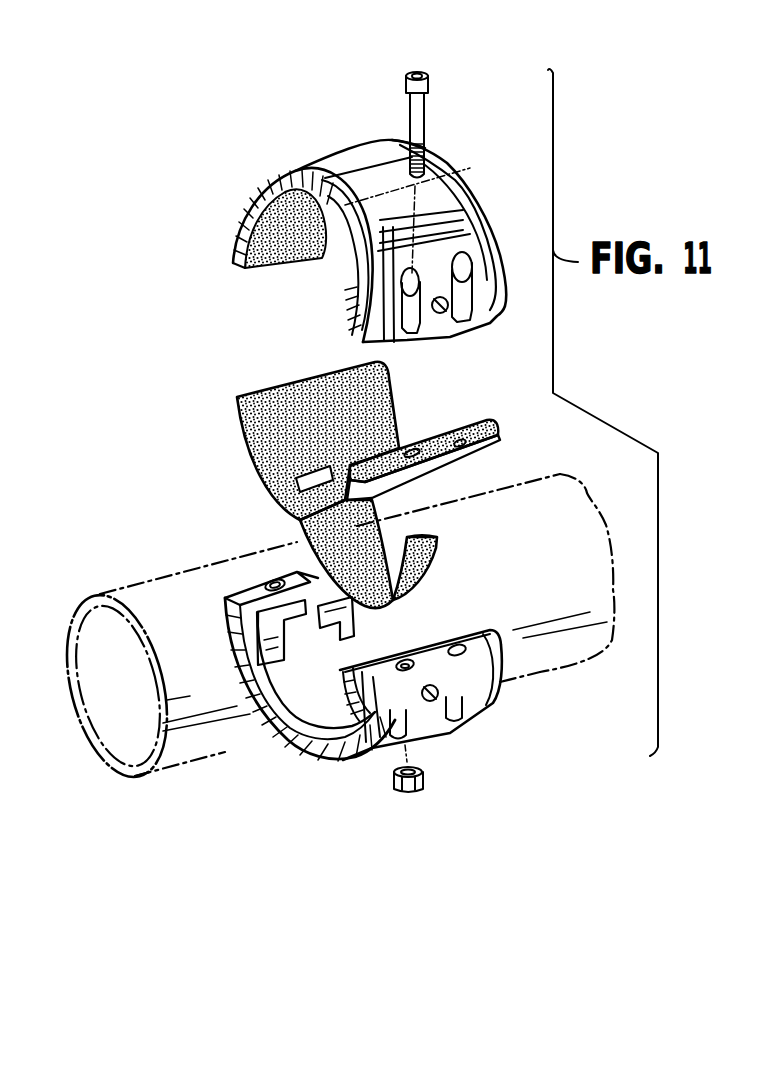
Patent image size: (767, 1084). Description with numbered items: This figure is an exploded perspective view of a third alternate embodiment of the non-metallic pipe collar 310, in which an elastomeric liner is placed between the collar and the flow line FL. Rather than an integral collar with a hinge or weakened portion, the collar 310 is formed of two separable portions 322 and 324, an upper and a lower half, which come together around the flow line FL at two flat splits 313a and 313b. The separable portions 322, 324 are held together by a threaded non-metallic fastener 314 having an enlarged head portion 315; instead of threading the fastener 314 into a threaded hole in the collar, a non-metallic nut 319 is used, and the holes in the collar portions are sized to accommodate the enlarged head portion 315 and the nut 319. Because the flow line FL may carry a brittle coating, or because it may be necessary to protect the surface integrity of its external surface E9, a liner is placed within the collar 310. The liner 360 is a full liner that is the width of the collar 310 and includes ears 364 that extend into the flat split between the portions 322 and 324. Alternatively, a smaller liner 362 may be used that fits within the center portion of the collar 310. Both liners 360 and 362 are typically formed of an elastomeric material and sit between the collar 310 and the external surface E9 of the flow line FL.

The non-metallic pipe collar 310 is at (331, 234).
The threaded non-metallic fastener 314 is at (416, 172).
The enlarged head portion 315 is at (432, 88).
The separable portion 322 is at (462, 176).
The liner 360 is at (407, 485).
The liner 362 is at (440, 560).
The ears 364 is at (485, 455).
The flat split 313a is at (473, 630).
The flat split 313b is at (253, 582).
The separable portion 324 is at (359, 636).
The non-metallic nut 319 is at (435, 779).
The flow line FL is at (595, 510).
The external surface E9 is at (193, 750).